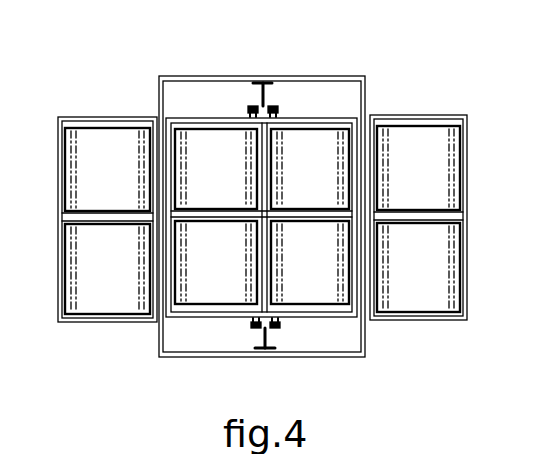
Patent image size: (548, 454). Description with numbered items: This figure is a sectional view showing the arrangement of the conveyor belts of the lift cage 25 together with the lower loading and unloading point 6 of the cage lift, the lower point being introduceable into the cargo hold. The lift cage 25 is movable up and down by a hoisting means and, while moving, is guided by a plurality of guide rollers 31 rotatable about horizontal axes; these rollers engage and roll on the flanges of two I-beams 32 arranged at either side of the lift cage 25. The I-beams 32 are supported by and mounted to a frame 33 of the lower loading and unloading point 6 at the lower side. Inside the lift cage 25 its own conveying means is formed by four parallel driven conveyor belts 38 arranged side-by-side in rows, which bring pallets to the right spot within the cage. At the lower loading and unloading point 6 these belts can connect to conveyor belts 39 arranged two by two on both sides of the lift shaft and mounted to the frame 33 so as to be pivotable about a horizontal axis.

The lower loading and unloading point 6 is at (398, 112).
The lift cage 25 is at (207, 120).
The guide rollers 31 is at (248, 107).
The I-beams 32 is at (266, 95).
The frame 33 is at (303, 77).
The conveyor belts 38 is at (227, 177).
The conveyor belts 39 is at (100, 190).